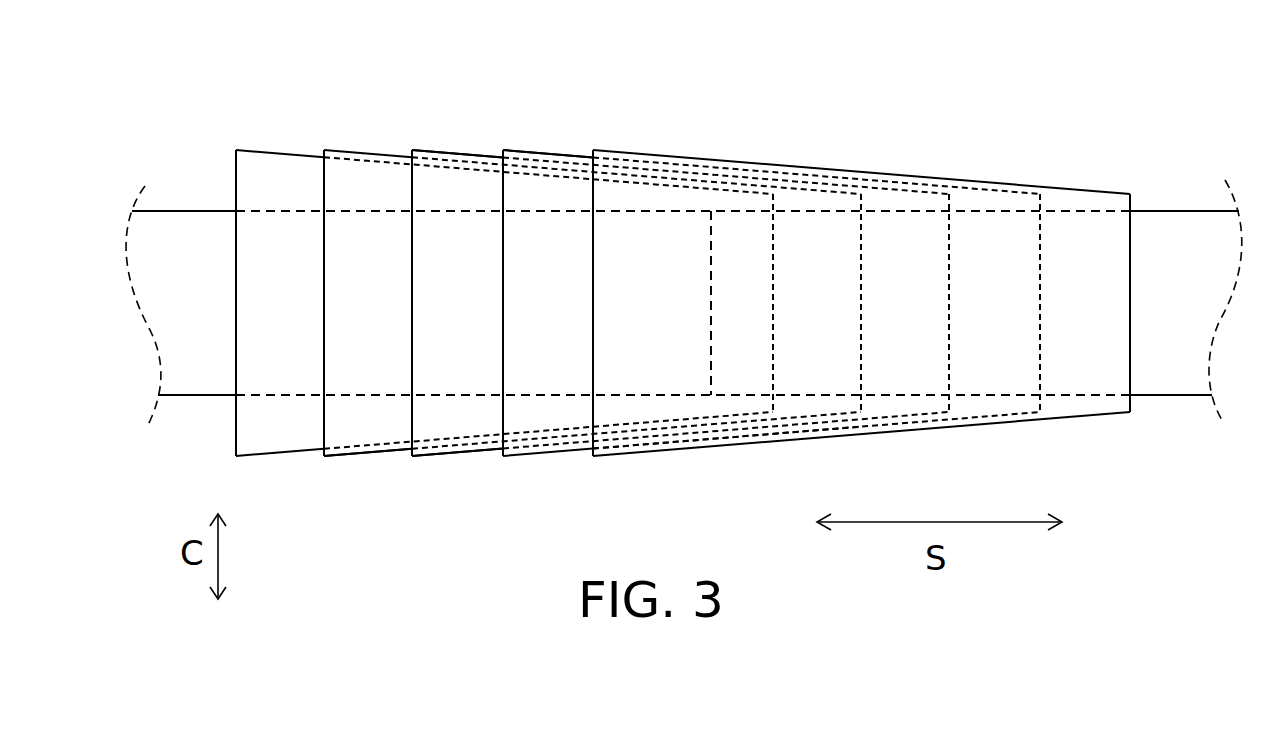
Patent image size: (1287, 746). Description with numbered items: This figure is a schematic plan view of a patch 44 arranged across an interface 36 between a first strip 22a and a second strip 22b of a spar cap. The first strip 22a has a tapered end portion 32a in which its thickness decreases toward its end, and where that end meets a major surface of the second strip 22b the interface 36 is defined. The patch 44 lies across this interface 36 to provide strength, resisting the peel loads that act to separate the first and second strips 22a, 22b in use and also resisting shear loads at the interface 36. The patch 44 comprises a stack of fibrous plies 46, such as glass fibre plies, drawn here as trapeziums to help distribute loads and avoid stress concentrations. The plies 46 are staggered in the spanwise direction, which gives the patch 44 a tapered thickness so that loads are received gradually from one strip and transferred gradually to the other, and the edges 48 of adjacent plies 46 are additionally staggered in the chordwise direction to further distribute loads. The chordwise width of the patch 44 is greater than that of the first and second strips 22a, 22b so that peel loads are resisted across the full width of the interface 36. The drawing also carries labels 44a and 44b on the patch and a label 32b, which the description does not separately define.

The first strip 22a is at (160, 298).
The second strip 22b is at (1208, 296).
The tapered end portion 32a is at (673, 403).
The second edge of section 32b is at (745, 403).
The interface 36 is at (711, 302).
The patch 44 is at (683, 232).
The first ply 44a is at (372, 142).
The last ply 44b is at (882, 154).
The patch plies 46 is at (268, 162).
The edges 48 is at (545, 152).